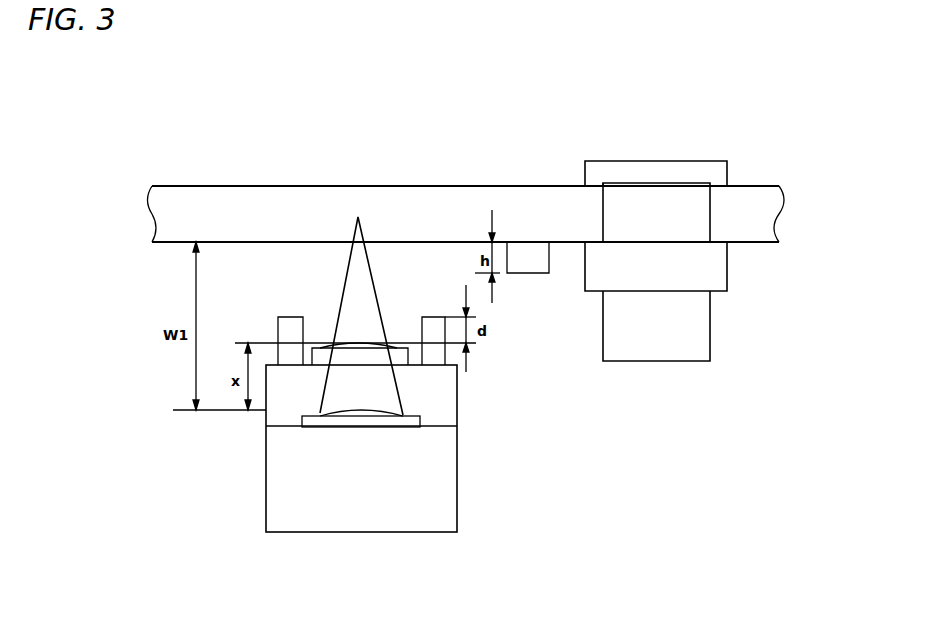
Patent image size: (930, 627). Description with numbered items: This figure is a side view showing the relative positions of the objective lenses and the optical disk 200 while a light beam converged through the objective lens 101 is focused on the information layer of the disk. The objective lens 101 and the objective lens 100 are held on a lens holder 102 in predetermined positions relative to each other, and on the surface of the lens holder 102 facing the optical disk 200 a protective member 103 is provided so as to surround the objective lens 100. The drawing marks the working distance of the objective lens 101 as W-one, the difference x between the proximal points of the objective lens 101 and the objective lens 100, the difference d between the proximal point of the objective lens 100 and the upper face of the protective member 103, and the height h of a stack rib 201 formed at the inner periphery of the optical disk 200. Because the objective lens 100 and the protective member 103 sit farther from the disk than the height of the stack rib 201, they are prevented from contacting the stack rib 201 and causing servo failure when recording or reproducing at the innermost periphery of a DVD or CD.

The optical disk 200 is at (450, 208).
The stack rib 201 is at (527, 258).
The objective lens 100 is at (360, 353).
The objective lens 101 is at (363, 423).
The lens holder 102 is at (298, 473).
The protective member 103 is at (433, 328).